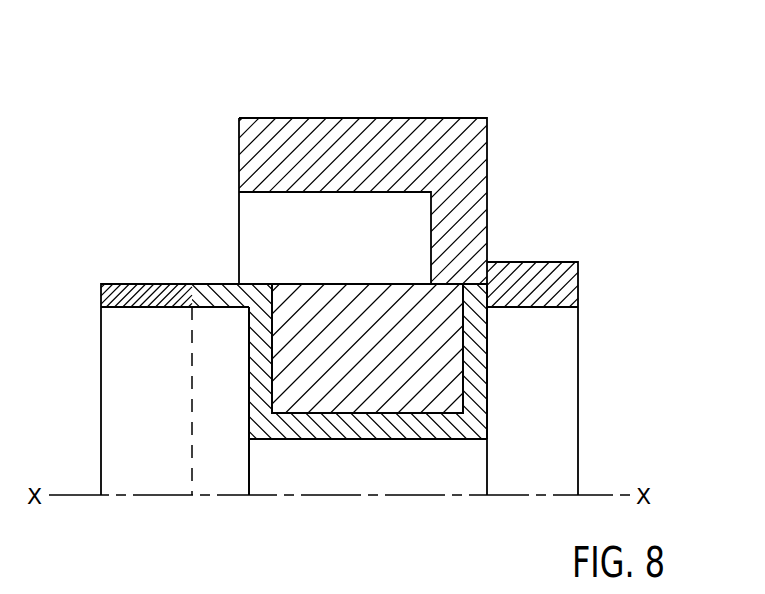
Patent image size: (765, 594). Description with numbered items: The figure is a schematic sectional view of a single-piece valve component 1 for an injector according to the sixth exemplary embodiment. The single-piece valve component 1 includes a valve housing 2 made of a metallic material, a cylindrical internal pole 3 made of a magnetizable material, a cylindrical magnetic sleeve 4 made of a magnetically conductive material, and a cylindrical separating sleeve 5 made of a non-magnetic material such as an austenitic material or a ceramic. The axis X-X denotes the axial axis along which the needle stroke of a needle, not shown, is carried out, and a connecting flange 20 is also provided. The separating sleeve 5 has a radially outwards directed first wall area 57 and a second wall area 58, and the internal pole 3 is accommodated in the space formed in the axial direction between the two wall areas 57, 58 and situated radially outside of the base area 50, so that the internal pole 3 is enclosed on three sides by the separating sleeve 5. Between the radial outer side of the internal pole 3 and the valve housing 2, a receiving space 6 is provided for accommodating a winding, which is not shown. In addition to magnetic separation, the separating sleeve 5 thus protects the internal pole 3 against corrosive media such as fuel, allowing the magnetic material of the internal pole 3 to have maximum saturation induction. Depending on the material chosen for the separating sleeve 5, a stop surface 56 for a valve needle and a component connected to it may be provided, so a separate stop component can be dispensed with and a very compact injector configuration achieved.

The single-piece valve component 1 is at (371, 287).
The valve housing 2 is at (453, 148).
The internal pole 3 is at (335, 385).
The magnetic sleeve 4 is at (130, 284).
The separating sleeve 5 is at (389, 429).
The receiving space 6 is at (275, 218).
The connecting flange 20 is at (537, 285).
The base area 50 is at (400, 428).
The stop surface 56 is at (249, 398).
The first wall area 57 is at (262, 351).
The second wall area 58 is at (483, 352).